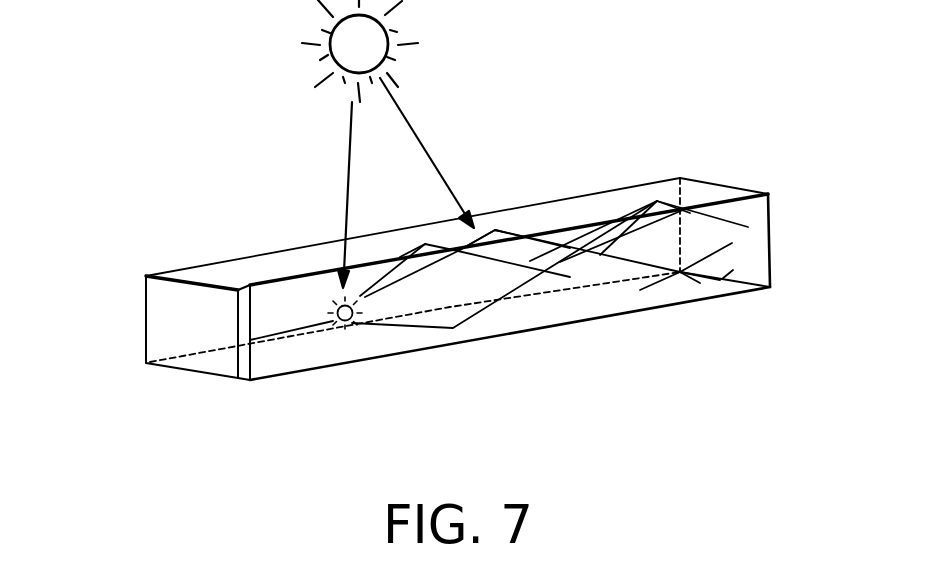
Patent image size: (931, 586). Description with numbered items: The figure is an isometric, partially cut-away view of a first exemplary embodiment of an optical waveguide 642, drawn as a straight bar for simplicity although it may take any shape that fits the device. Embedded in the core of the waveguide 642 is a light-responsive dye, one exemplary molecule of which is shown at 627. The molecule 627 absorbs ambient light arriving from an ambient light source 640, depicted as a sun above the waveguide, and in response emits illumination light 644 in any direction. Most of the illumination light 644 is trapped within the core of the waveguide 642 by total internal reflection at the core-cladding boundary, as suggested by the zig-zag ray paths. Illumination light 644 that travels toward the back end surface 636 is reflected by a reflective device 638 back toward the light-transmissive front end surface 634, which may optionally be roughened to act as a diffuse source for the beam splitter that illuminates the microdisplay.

The ambient light source 640 is at (395, 144).
The light-transmissive front end surface 634 is at (482, 253).
The back end surface 636 is at (156, 284).
The reflective device 638 is at (137, 304).
The molecule of light-responsive dye 627 is at (302, 253).
The waveguide 642 is at (468, 301).
The illumination light 644 is at (599, 249).